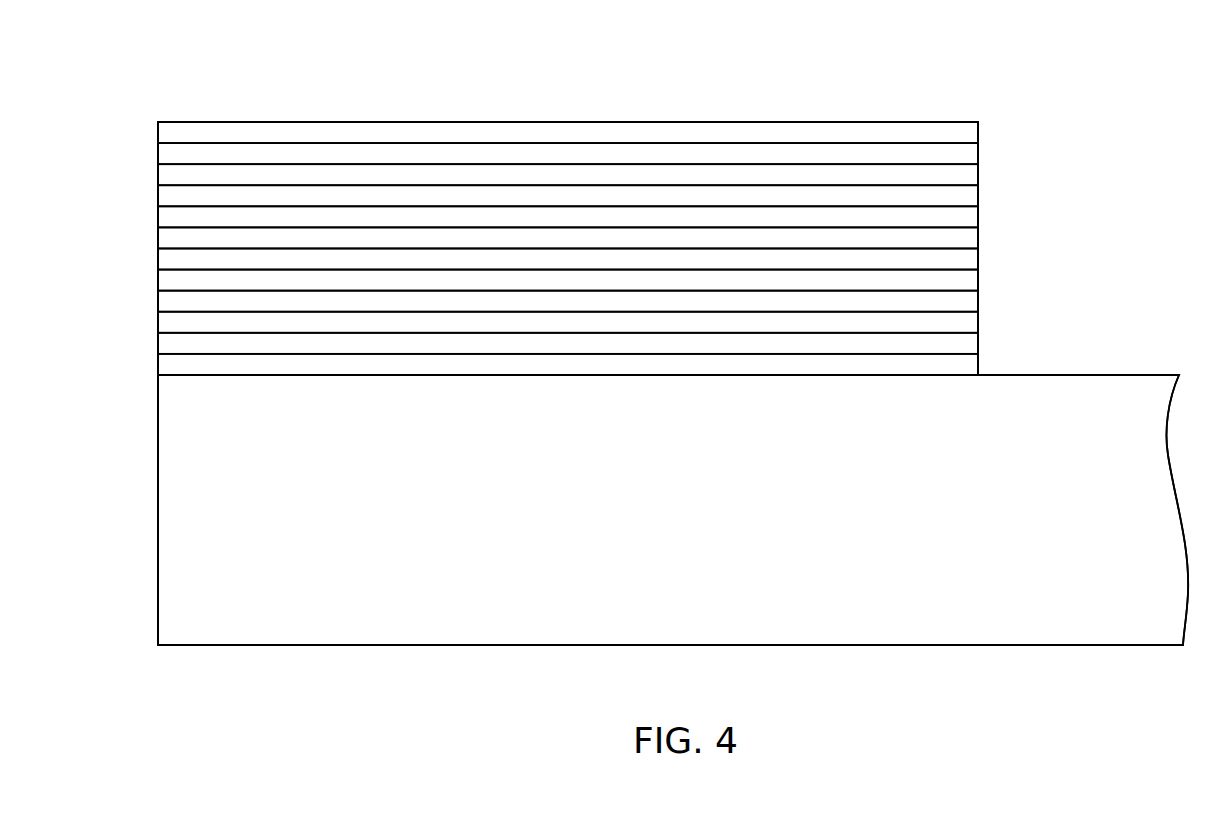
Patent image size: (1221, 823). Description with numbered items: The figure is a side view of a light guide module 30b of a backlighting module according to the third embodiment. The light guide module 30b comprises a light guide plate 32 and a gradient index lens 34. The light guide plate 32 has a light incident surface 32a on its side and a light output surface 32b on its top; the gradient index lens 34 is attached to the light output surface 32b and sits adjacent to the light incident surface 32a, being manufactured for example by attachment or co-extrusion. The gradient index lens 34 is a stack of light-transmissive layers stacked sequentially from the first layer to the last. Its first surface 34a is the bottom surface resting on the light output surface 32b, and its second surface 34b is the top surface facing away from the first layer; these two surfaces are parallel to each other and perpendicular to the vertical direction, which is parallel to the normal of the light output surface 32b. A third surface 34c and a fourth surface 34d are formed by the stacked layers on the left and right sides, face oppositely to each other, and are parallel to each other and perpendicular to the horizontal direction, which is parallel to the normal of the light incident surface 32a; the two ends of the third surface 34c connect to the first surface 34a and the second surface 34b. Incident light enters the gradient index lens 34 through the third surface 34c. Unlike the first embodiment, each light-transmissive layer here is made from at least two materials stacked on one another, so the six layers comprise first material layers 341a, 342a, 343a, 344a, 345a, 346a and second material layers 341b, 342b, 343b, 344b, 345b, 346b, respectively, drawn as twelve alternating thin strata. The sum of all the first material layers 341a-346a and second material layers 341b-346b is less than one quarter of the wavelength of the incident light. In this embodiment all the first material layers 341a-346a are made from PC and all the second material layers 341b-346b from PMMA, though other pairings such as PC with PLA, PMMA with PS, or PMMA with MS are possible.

The light guide module 30b is at (183, 47).
The light guide plate 32 is at (1076, 620).
The light incident surface 32a is at (157, 523).
The light output surface 32b is at (1103, 372).
The gradient index lens 34 is at (853, 96).
The first surface 34a is at (524, 376).
The second surface 34b is at (552, 121).
The third surface 34c is at (157, 190).
The fourth surface 34d is at (980, 122).
The first material layer 341a is at (979, 364).
The second material layer 341b is at (979, 343).
The first material layer 342a is at (979, 322).
The second material layer 342b is at (979, 301).
The first material layer 343a is at (979, 280).
The second material layer 343b is at (979, 259).
The first material layer 344a is at (979, 238).
The second material layer 344b is at (979, 217).
The first material layer 345a is at (979, 196).
The second material layer 345b is at (979, 175).
The first material layer 346a is at (979, 154).
The second material layer 346b is at (979, 132).